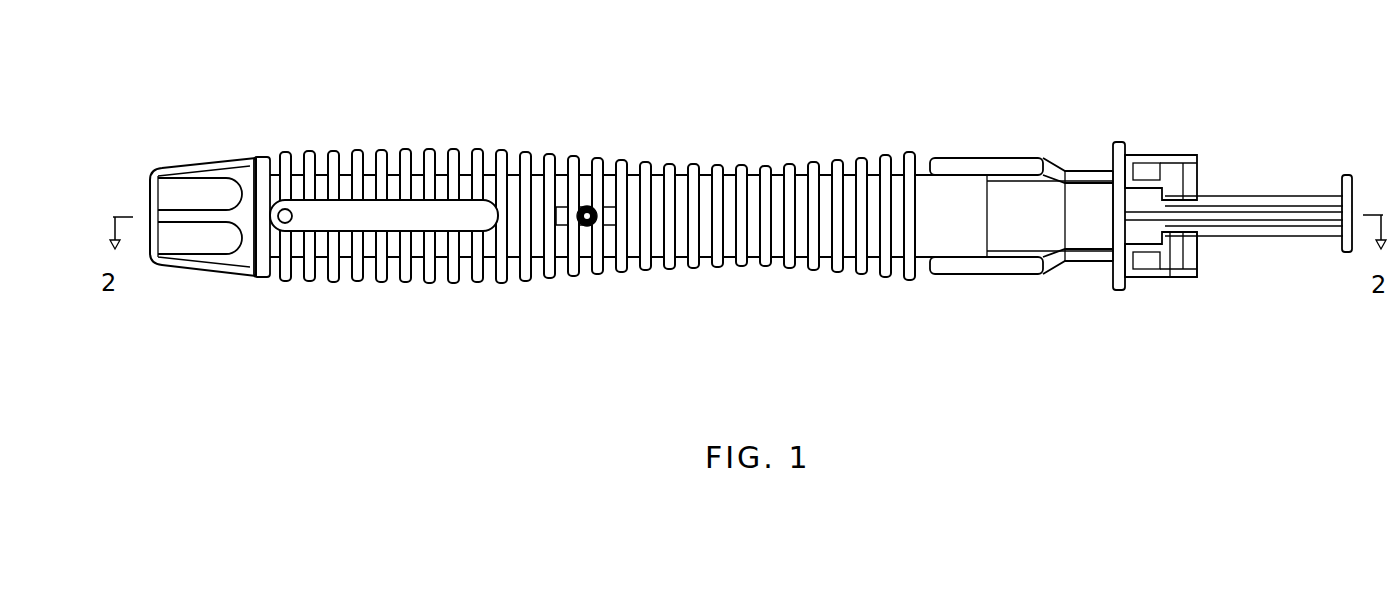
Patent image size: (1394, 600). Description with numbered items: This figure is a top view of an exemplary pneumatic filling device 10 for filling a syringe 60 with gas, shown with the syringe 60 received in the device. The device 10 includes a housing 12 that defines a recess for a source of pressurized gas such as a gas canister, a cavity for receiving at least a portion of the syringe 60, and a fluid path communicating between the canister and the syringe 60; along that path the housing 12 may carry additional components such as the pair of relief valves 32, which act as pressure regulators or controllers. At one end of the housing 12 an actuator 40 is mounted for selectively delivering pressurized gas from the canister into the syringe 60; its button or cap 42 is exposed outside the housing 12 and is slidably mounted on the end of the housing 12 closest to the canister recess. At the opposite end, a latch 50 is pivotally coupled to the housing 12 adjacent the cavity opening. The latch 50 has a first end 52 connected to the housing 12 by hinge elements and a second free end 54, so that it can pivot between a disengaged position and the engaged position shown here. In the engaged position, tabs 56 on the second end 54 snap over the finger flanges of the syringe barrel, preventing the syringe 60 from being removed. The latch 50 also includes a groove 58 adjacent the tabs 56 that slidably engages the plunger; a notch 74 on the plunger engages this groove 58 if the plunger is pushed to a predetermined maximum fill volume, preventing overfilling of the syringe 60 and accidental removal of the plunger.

The pneumatic filling device 10 is at (686, 116).
The housing 12 is at (502, 289).
The relief valves 32 is at (585, 232).
The actuator 40 is at (211, 156).
The cap 42 is at (184, 270).
The latch 50 is at (1047, 149).
The first end 52 is at (960, 273).
The second free end 54 is at (1162, 276).
The tabs 56 is at (1181, 269).
The groove 58 is at (1185, 220).
The syringe 60 is at (1245, 165).
The notch 74 is at (1170, 172).